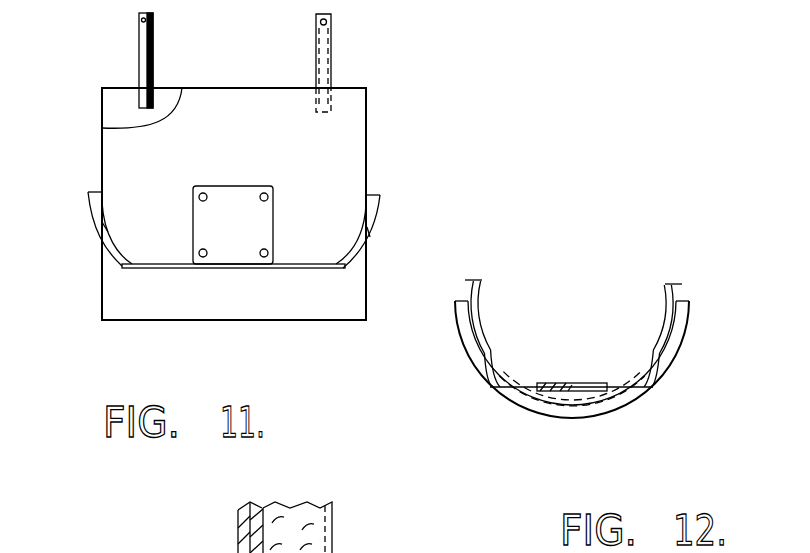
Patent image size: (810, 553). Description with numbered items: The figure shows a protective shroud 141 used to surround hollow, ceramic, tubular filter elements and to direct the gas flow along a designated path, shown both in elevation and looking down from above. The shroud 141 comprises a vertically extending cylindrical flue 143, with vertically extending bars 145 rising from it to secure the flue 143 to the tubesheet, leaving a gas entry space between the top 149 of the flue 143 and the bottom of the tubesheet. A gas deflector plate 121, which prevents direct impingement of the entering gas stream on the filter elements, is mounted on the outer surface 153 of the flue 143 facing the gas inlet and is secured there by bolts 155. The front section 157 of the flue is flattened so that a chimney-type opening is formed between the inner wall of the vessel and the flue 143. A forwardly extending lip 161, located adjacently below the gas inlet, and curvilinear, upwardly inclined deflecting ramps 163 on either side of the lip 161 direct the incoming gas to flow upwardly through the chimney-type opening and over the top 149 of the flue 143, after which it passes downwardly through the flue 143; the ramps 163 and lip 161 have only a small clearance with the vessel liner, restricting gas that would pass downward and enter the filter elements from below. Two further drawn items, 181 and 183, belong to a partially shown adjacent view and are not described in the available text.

In FIG. 11, the gas deflector plate 121 is at (252, 227).
In FIG. 12, the gas deflector plate 121 is at (568, 392).
In FIG. 11, the protective shroud 141 is at (382, 280).
In FIG. 12, the protective shroud 141 is at (510, 327).
In FIG. 11, the cylindrical flue 143 is at (250, 140).
In FIG. 12, the cylindrical flue 143 is at (480, 297).
In FIG. 11, the vertically extending bars 145 is at (153, 42).
In FIG. 11, the top of the flue 149 is at (215, 88).
In FIG. 11, the outer surface of the flue 153 is at (308, 163).
In FIG. 12, the outer surface of the flue 153 is at (604, 403).
In FIG. 11, the bolts 155 is at (209, 253).
In FIG. 12, the front section of the flue 157 is at (520, 390).
In FIG. 11, the forwardly extending lip 161 is at (163, 268).
In FIG. 12, the forwardly extending lip 161 is at (590, 400).
In FIG. 11, the deflecting ramps 163 is at (90, 192).
In FIG. 12, the deflecting ramps 163 is at (462, 322).
In FIG. 11, the body 181 is at (345, 552).
In FIG. 11, the hatched member 183 is at (208, 552).